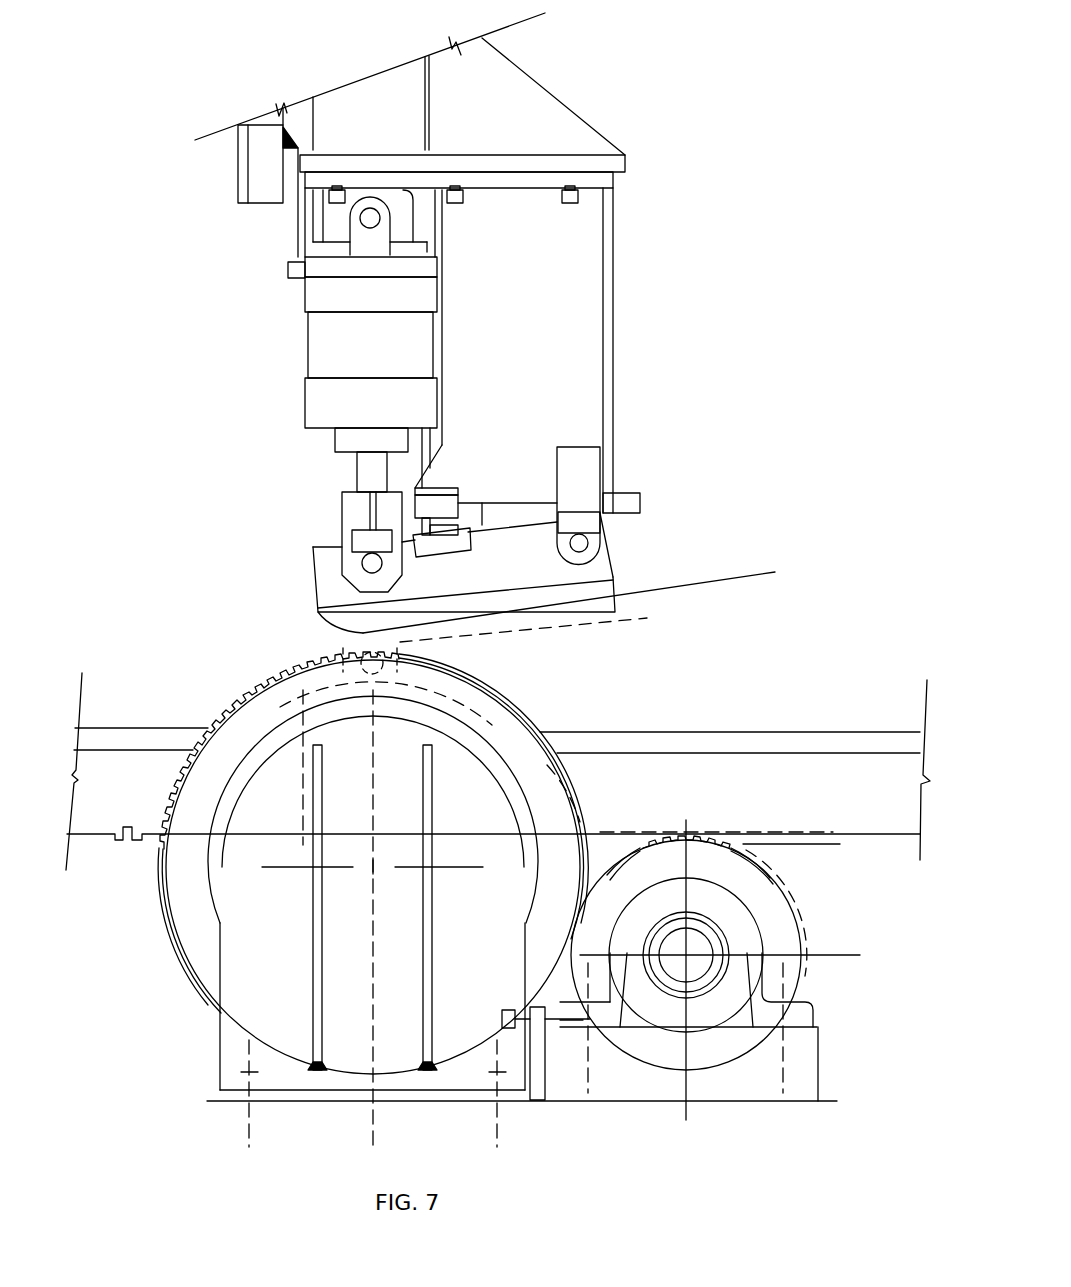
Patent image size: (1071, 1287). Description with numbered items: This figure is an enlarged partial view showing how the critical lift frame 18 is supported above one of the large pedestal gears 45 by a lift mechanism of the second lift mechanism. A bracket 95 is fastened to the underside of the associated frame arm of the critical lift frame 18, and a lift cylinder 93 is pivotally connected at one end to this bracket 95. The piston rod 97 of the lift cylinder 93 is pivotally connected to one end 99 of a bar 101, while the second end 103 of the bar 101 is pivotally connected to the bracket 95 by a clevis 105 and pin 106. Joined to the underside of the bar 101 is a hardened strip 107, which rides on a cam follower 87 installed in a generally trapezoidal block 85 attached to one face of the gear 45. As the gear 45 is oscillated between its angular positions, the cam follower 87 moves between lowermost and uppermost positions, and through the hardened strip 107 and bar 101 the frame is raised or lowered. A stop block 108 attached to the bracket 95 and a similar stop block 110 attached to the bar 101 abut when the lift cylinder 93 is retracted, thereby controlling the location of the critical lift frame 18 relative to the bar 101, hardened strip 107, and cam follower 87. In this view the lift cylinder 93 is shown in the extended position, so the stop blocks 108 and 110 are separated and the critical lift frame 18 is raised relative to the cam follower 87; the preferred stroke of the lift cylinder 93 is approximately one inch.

The critical lift frame 18 is at (572, 105).
The gear 45 is at (523, 755).
The trapezoidal block 85 is at (497, 685).
The cam follower 87 is at (541, 623).
The lift cylinder 93 is at (357, 350).
The bracket 95 is at (538, 277).
The piston rod 97 is at (368, 475).
The one end of the bar 99 is at (333, 587).
The bar 101 is at (624, 570).
The second end of the bar 103 is at (595, 572).
The clevis 105 is at (583, 470).
The pin 106 is at (582, 541).
The hardened strip 107 is at (566, 586).
The stop block 108 is at (438, 507).
The stop block 110 is at (432, 545).